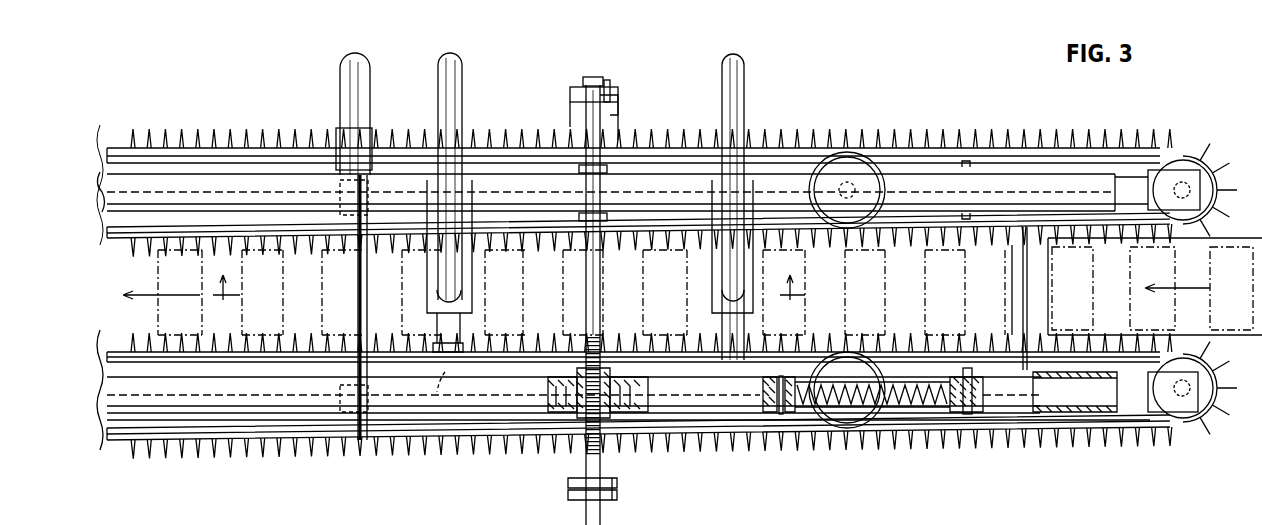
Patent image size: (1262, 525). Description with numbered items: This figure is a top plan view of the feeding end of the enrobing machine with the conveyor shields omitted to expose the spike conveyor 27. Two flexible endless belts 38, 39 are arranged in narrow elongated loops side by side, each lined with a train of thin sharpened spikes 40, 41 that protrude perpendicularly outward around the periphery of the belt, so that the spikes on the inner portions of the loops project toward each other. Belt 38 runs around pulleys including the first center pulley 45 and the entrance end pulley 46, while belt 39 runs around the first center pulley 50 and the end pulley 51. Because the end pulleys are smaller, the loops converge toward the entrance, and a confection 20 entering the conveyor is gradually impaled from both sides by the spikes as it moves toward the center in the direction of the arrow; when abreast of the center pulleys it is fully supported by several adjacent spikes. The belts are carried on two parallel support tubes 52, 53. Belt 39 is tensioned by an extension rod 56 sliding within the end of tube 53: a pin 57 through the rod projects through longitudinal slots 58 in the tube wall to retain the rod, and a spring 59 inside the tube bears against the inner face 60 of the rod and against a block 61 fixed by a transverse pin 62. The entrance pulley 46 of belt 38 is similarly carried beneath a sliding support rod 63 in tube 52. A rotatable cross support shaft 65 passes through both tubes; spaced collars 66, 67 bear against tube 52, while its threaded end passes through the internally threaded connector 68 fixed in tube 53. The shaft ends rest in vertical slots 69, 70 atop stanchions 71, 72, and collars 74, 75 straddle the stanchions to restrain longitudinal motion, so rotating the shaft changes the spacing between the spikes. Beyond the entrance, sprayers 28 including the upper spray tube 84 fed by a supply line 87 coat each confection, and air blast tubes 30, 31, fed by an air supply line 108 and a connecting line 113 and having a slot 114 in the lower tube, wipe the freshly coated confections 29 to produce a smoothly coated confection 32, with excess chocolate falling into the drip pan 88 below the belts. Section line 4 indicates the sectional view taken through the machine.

The confection 20 is at (1234, 238).
The conveyor 27 is at (963, 107).
The sprayers 28 is at (699, 218).
The freshly coated confection 29 is at (646, 280).
The upper air blast tube 30 is at (444, 324).
The lower air blast tube 31 is at (345, 216).
The coated confection 32 is at (154, 274).
The section line 4 is at (509, 295).
The flexible endless belt 38 is at (107, 148).
The flexible endless belt 39 is at (114, 350).
The thin spikes 40 is at (148, 134).
The thin spikes 41 is at (147, 340).
The first center pulley 45 is at (846, 152).
The entrance end pulley 46 is at (1185, 165).
The first center pulley 50 is at (845, 428).
The end pulley 51 is at (1194, 428).
The support tube 52 is at (116, 181).
The support tube 53 is at (115, 392).
The extension rod 56 is at (1145, 388).
The pin 57 is at (968, 368).
The longitudinal slots 58 is at (936, 380).
The spring 59 is at (802, 385).
The inner face 60 is at (967, 414).
The block 61 is at (764, 385).
The transverse pin 62 is at (784, 386).
The sliding support rod 63 is at (1129, 175).
The cross support shaft 65 is at (588, 116).
The collar 66 is at (608, 167).
The collar 67 is at (608, 216).
The connector 68 is at (611, 372).
The vertical slot 69 is at (612, 496).
The vertical slot 70 is at (583, 95).
The vertical stanchion 71 is at (617, 484).
The vertical stanchion 72 is at (618, 97).
The collar 74 is at (606, 86).
The collar 75 is at (568, 498).
The upper spray tube 84 is at (753, 213).
The supply line 87 is at (726, 86).
The drip pan 88 is at (838, 309).
The air supply line 108 is at (444, 91).
The connecting line 113 is at (345, 90).
The longitudinal slot 114 is at (365, 299).